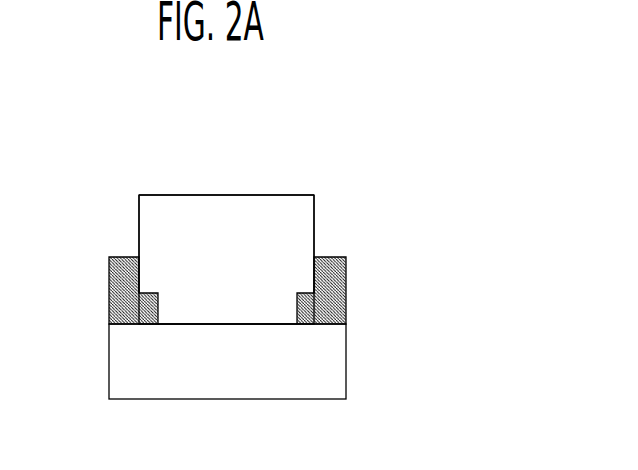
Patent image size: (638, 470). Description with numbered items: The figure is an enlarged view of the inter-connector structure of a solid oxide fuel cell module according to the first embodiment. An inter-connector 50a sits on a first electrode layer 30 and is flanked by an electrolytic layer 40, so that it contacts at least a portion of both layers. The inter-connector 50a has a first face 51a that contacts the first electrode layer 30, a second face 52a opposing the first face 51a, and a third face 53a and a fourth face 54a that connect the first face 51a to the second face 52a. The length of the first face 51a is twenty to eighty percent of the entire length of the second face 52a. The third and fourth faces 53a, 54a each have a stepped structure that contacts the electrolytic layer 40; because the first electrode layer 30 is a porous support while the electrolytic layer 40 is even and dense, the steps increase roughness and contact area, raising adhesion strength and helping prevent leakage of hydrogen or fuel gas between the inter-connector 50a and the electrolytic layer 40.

The first electrode layer 30 is at (335, 358).
The electrolytic layer 40 is at (337, 277).
The inter-connector 50a is at (321, 157).
The first face 51a is at (226, 324).
The second face 52a is at (227, 195).
The third face 53a is at (138, 240).
The fourth face 54a is at (315, 238).